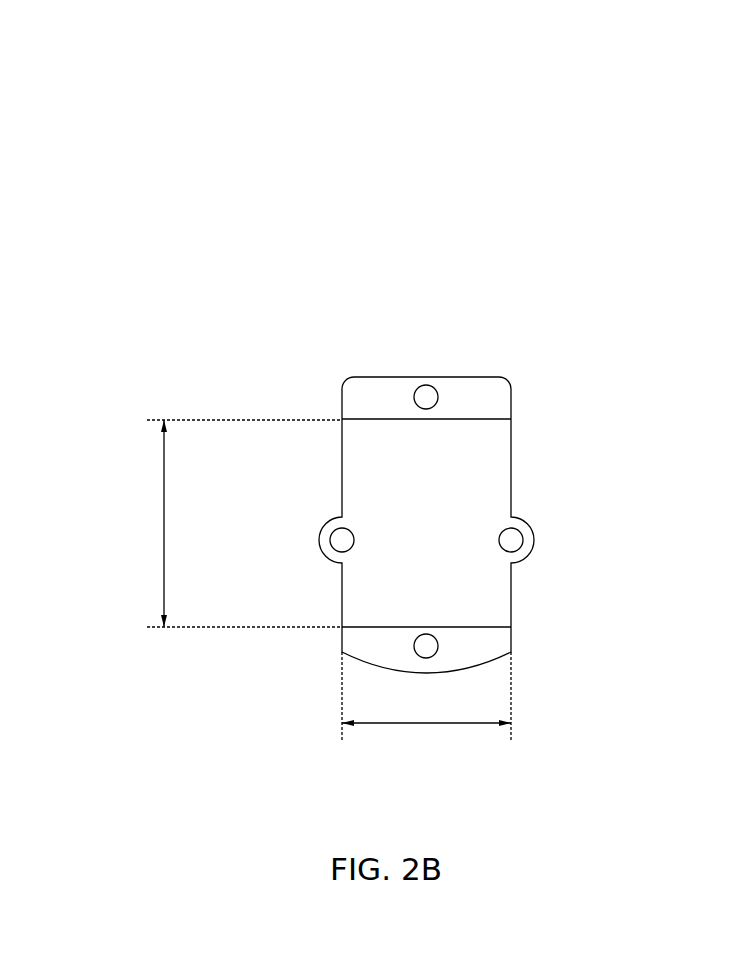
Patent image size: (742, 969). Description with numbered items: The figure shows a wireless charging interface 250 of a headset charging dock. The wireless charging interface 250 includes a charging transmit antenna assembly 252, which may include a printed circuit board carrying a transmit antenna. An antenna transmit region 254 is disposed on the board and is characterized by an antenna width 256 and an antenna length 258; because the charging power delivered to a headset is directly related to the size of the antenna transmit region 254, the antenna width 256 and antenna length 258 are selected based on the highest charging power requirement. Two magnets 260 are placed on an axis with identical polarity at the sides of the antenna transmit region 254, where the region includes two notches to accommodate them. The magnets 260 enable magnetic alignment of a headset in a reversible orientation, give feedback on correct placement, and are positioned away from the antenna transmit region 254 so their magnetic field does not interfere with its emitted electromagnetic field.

The wireless charging interface 250 is at (549, 182).
The charging transmit antenna assembly 252 is at (366, 395).
The antenna transmit region 254 is at (473, 435).
The antenna width 256 is at (423, 723).
The antenna length 258 is at (164, 523).
The magnet 260 is at (562, 563).